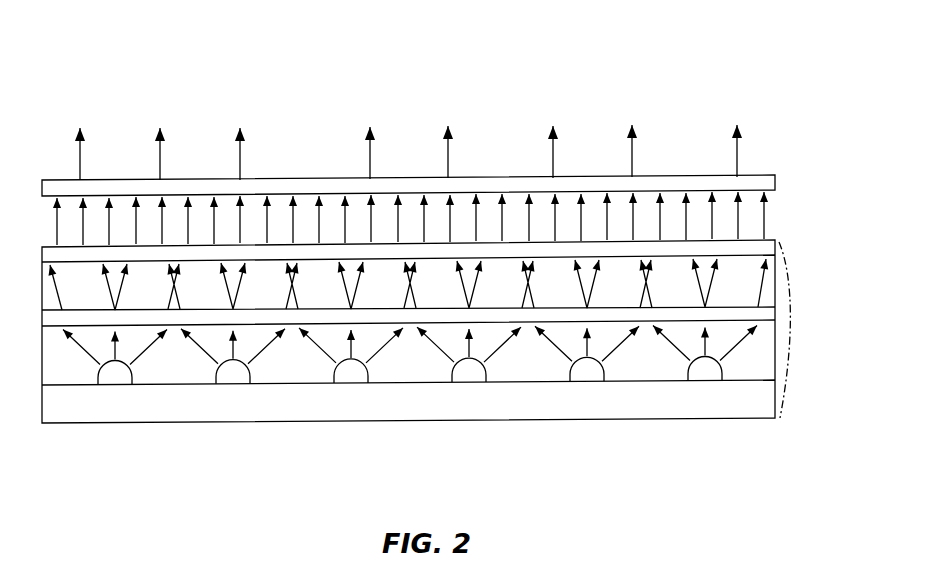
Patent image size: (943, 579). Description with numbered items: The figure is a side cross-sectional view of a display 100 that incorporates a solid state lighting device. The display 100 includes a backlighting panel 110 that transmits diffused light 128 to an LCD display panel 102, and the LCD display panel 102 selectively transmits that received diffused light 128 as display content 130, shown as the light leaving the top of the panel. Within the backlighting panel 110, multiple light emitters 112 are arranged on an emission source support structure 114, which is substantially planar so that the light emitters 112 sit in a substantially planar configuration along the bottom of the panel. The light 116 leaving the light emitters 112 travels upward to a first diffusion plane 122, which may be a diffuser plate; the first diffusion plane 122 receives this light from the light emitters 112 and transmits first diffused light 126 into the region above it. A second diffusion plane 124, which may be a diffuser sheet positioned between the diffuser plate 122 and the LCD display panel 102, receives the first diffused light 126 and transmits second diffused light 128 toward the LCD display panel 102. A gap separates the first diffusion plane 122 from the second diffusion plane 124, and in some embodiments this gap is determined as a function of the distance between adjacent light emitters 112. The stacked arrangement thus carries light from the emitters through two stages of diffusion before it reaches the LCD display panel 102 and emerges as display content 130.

The display 100 is at (570, 72).
The LCD display panel 102 is at (752, 182).
The backlighting panel 110 is at (788, 327).
The light emitters 112 is at (482, 367).
The emission source support structure 114 is at (748, 400).
The light emitted from LEDs 116 is at (322, 348).
The first diffusion plane 122 is at (763, 313).
The second diffusion plane 124 is at (763, 248).
The first diffused light 126 is at (225, 285).
The second diffused light 128 is at (480, 220).
The display content 130 is at (634, 150).